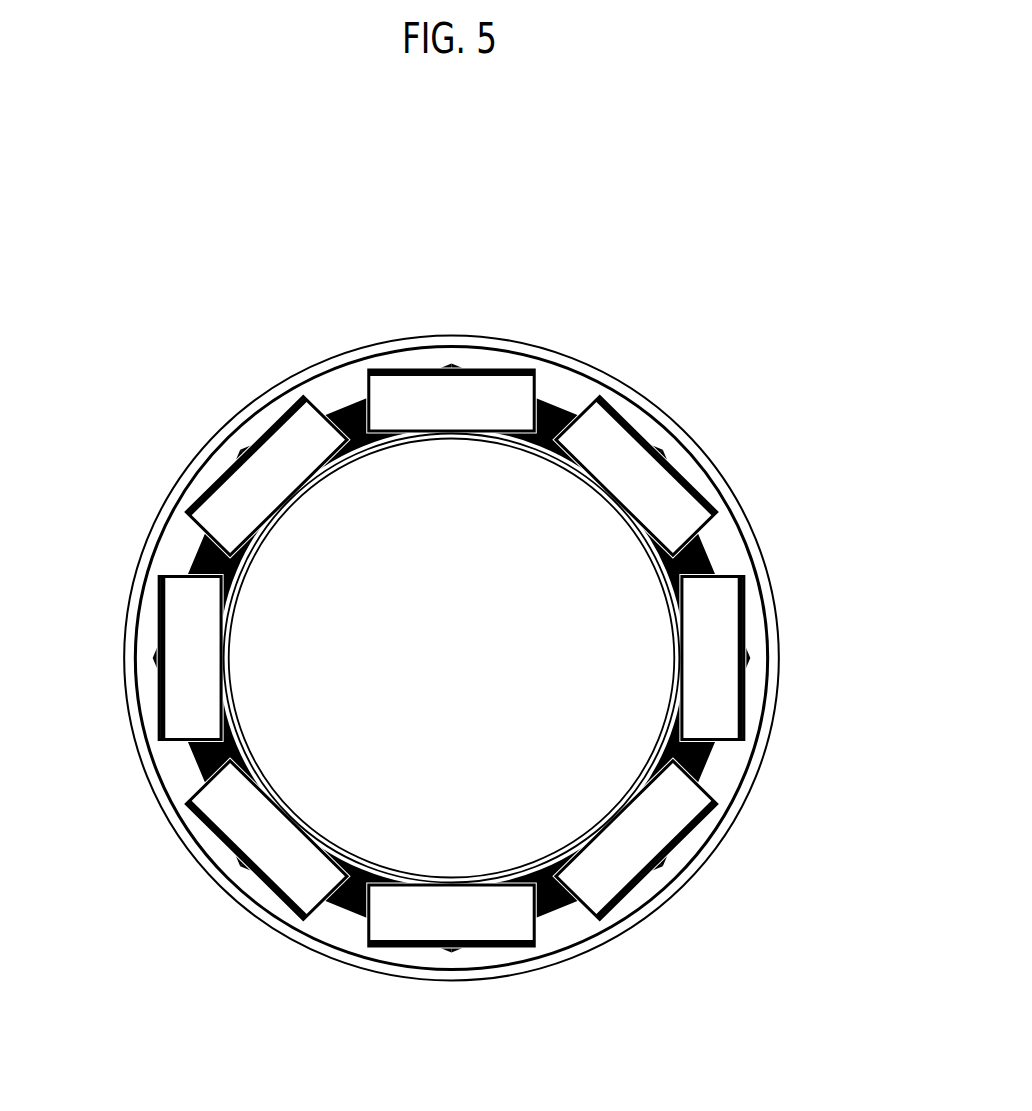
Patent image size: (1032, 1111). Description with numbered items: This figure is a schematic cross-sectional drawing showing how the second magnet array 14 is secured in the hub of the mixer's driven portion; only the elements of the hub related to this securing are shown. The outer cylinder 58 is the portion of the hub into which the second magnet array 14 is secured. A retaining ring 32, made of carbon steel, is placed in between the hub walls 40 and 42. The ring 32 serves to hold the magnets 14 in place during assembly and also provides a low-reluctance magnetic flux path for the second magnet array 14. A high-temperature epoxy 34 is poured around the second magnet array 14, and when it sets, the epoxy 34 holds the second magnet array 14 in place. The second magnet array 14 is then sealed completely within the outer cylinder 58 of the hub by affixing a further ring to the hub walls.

The outer cylinder 58 is at (597, 327).
The hub wall 40 is at (765, 737).
The retaining ring 32 is at (573, 388).
The high-temperature epoxy 34 is at (213, 558).
The hub wall 42 is at (708, 747).
The second magnet array 14 is at (643, 483).